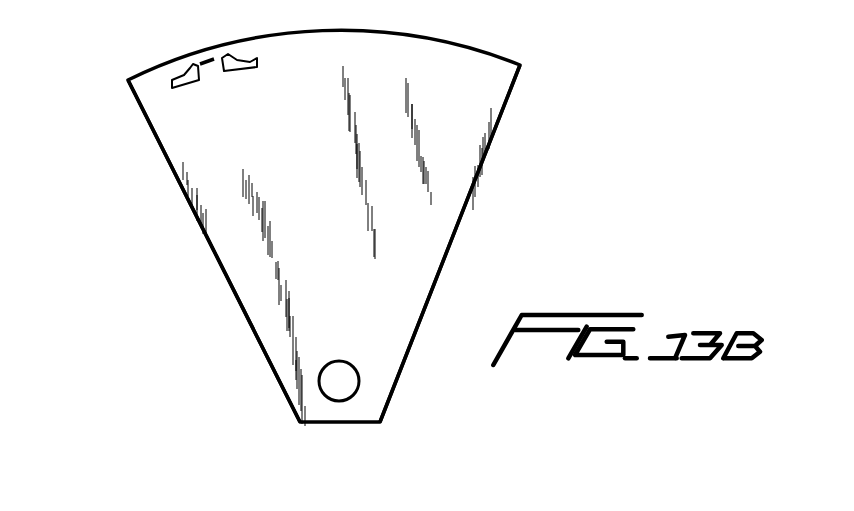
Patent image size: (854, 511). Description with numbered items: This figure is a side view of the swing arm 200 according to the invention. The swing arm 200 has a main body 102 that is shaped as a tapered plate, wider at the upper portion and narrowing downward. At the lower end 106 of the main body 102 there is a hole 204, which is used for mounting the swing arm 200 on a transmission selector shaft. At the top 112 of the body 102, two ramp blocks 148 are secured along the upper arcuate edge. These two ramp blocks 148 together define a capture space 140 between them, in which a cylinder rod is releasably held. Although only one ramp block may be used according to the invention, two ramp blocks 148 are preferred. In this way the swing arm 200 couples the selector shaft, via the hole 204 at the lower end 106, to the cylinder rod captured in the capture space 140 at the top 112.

The main body 102 is at (457, 200).
The lower end 106 is at (300, 362).
The top 112 is at (167, 108).
The capture space 140 is at (208, 60).
The ramp blocks 148 is at (170, 84).
The swing arm 200 is at (490, 107).
The hole 204 is at (350, 372).